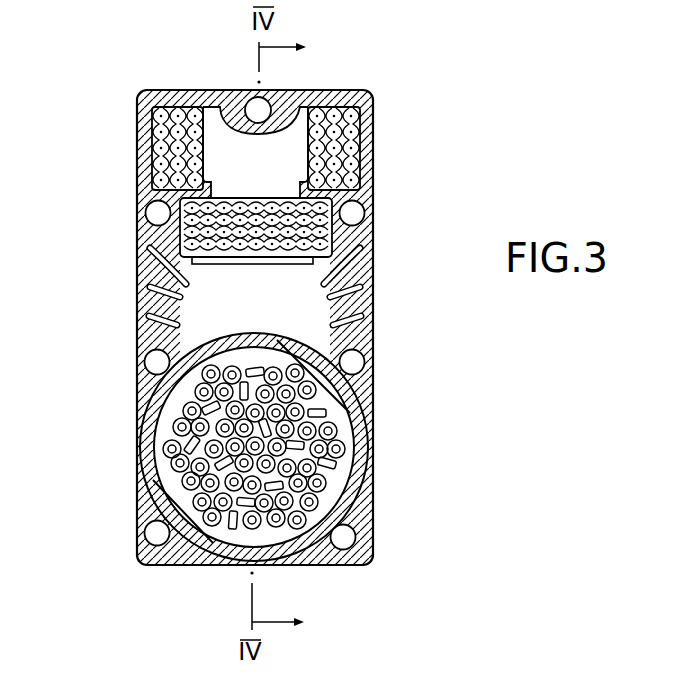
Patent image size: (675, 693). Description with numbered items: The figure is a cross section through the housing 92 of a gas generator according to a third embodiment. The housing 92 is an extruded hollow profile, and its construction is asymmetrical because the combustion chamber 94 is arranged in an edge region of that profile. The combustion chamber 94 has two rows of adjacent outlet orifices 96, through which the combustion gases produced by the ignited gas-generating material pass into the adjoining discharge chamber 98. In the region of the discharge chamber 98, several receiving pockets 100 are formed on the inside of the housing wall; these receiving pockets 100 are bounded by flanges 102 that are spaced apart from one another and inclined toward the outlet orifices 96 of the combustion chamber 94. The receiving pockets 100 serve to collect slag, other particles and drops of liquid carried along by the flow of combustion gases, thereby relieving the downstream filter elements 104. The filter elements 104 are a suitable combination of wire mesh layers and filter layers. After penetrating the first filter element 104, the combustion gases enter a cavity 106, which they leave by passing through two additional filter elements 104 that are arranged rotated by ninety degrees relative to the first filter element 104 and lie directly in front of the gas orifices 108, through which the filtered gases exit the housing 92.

The housing 92 is at (383, 88).
The combustion chamber 94 is at (340, 492).
The outlet orifices 96 is at (180, 337).
The discharge chamber 98 is at (302, 278).
The receiving pockets 100 is at (345, 318).
The flanges 102 is at (152, 321).
The filter elements 104 is at (158, 114).
The cavity 106 is at (226, 140).
The gas orifices 108 is at (140, 158).